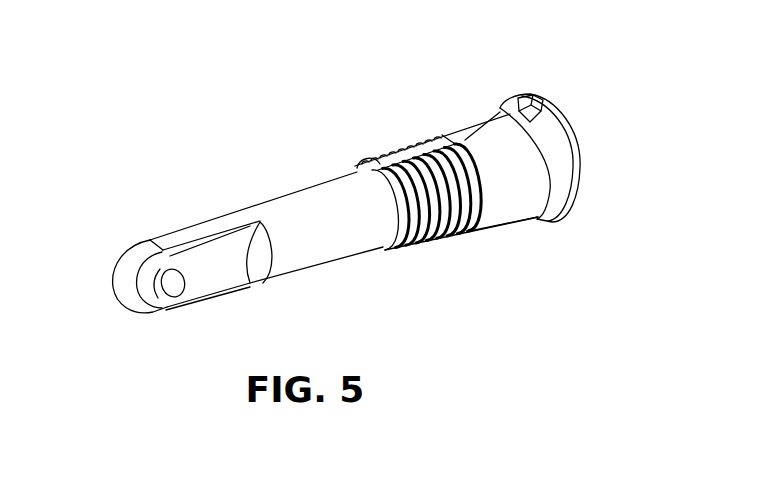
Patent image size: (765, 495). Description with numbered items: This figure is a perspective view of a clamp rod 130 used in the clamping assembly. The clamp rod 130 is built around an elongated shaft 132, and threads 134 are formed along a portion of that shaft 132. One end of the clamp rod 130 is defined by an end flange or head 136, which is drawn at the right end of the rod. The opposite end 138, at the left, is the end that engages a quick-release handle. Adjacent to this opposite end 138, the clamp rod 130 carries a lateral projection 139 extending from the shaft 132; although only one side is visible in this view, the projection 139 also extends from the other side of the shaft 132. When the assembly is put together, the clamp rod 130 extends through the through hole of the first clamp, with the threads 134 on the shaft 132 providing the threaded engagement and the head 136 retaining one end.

The clamp rod 130 is at (226, 141).
The shaft 132 is at (421, 249).
The threads 134 is at (461, 237).
The end flange or head 136 is at (567, 200).
The opposite end 138 is at (122, 284).
The lateral projection 139 is at (167, 291).